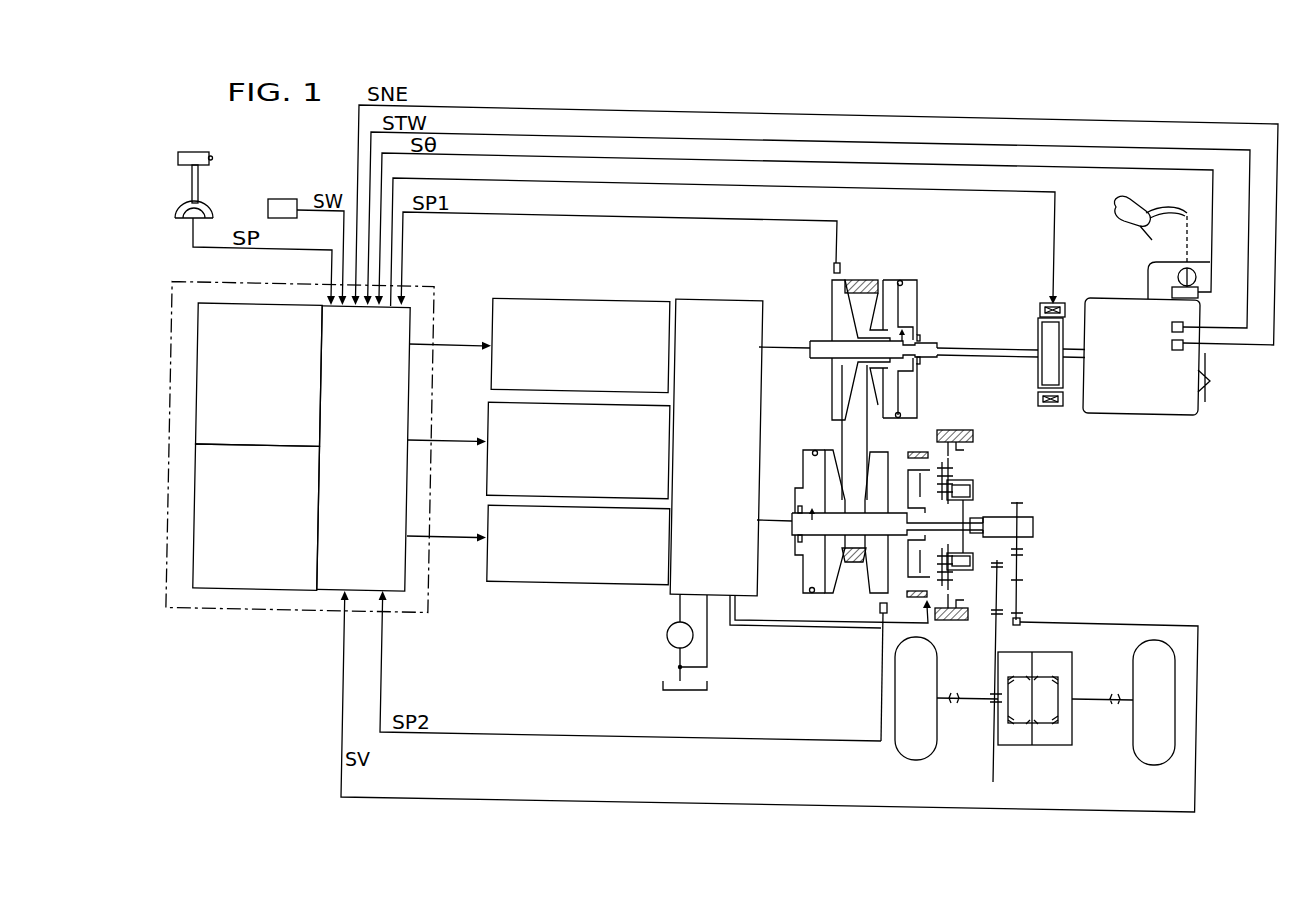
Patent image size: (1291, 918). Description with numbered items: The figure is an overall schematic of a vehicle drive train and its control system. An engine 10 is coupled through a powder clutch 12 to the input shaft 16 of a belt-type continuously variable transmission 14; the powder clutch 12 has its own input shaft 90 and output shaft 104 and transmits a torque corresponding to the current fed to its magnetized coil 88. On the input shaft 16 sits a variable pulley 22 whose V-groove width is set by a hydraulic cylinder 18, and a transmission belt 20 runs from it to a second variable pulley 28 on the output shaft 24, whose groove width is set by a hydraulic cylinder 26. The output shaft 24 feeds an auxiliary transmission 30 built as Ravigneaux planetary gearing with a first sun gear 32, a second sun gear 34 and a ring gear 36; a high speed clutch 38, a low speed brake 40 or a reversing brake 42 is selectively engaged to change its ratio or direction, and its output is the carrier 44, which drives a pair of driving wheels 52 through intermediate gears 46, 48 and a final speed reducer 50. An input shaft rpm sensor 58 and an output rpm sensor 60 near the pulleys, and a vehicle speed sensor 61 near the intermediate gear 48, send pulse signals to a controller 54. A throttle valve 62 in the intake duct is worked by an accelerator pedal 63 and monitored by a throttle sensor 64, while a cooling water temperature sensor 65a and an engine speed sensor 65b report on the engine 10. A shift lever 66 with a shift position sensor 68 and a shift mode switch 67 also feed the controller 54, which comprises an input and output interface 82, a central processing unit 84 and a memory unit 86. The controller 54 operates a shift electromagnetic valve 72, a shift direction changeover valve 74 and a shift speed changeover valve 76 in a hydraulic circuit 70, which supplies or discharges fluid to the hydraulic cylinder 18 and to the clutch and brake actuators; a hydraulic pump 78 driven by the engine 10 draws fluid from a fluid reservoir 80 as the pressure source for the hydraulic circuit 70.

The engine 10 is at (1117, 414).
The powder clutch 12 is at (1034, 303).
The continuously variable transmission 14 is at (891, 325).
The input shaft 16 is at (923, 343).
The hydraulic cylinder 18 is at (905, 297).
The transmission belt 20 is at (850, 280).
The variable pulley 22 is at (895, 269).
The output shaft 24 is at (860, 550).
The hydraulic cylinder 26 is at (805, 553).
The variable pulley 28 is at (826, 440).
The auxiliary transmission 30 is at (881, 485).
The first sun gear 32 is at (965, 498).
The second sun gear 34 is at (1003, 500).
The ring gear 36 is at (956, 463).
The high speed clutch 38 is at (912, 466).
The low speed brake 40 is at (972, 514).
The reversing brake 42 is at (973, 440).
The carrier 44 is at (963, 496).
The intermediate gear 46 is at (993, 580).
The intermediate gear 48 is at (1020, 582).
The final speed reducer 50 is at (1054, 757).
The driving wheels 52 is at (937, 738).
The controller 54 is at (245, 612).
The input shaft rpm sensor 58 is at (832, 268).
The output rpm sensor 60 is at (880, 609).
The vehicle speed sensor 61 is at (1020, 626).
The throttle valve 62 is at (1178, 277).
The accelerator pedal 63 is at (1152, 239).
The throttle sensor 64 is at (1198, 296).
The cooling water temperature sensor 65a is at (1172, 327).
The engine speed sensor 65b is at (1172, 345).
The shift lever 66 is at (200, 180).
The shift mode switch 67 is at (270, 199).
The shift position sensor 68 is at (192, 219).
The hydraulic circuit 70 is at (686, 301).
The shift electromagnetic valve 72 is at (490, 341).
The shift direction changeover valve 74 is at (486, 437).
The shift speed changeover valve 76 is at (485, 533).
The hydraulic pump 78 is at (667, 637).
The fluid reservoir 80 is at (661, 689).
The input and output interface 82 is at (410, 316).
The central processing unit 84 is at (203, 303).
The memory unit 86 is at (207, 590).
The magnetized coil 88 is at (1039, 308).
The input shaft 90 is at (1077, 362).
The output shaft 104 is at (1000, 347).